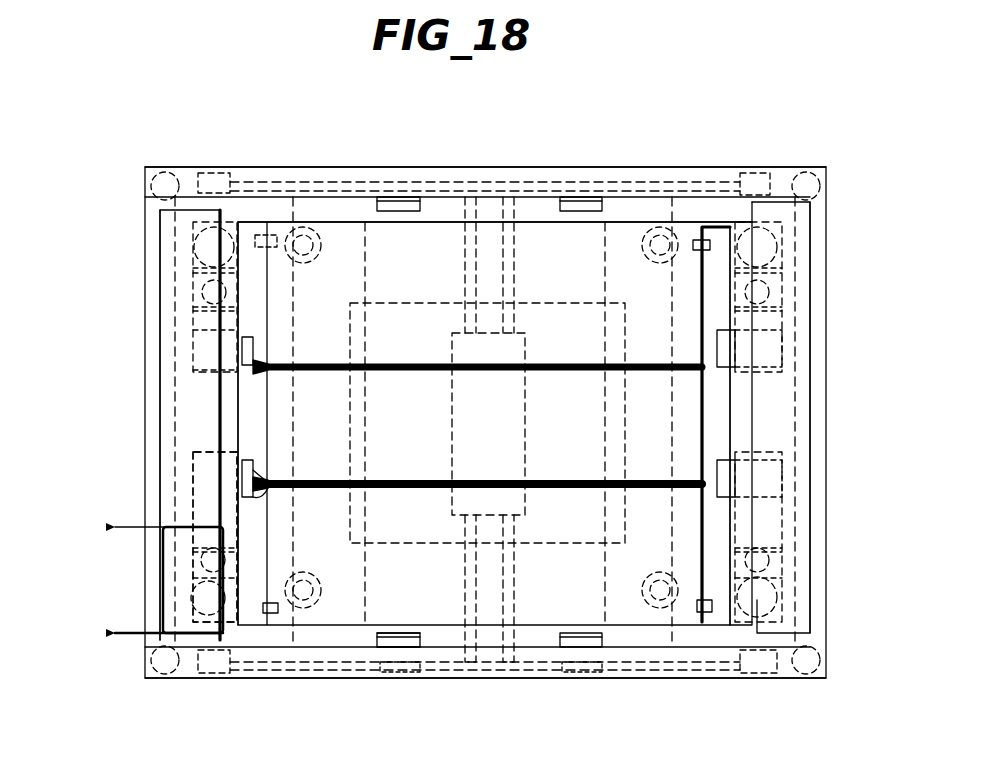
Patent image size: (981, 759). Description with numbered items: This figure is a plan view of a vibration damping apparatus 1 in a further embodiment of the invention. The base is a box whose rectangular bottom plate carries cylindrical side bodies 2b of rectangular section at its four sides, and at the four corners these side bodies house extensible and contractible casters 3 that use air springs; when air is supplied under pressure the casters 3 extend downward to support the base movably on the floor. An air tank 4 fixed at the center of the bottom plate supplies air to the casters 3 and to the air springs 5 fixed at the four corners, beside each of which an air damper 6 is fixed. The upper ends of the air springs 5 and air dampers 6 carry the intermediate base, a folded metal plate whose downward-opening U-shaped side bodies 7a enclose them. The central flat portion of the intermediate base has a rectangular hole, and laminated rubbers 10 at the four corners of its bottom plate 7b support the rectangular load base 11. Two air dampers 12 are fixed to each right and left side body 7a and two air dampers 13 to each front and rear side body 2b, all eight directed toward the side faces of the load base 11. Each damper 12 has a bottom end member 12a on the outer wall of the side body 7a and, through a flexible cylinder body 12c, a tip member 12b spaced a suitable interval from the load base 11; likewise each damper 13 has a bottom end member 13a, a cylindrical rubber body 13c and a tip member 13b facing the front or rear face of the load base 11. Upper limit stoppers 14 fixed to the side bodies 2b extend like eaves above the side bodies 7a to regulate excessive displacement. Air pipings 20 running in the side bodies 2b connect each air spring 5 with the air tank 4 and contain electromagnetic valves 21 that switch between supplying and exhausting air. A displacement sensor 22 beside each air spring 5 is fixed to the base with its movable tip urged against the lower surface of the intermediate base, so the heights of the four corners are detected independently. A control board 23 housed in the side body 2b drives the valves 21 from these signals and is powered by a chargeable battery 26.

The table apparatus 1 is at (272, 148).
The cylindrical side body 2b is at (143, 432).
The caster 3 is at (150, 172).
The air tank 4 is at (527, 515).
The air spring 5 is at (728, 175).
The air damper 6 is at (710, 175).
The U-shaped side body 7a is at (237, 445).
The bottom plate 7b is at (245, 415).
The laminated rubber 10 is at (303, 228).
The load base 11 is at (530, 222).
The air damper 12 is at (200, 335).
The bottom end member 12a is at (217, 475).
The tip member 12b is at (265, 508).
The flexible cylinder body 12c is at (283, 490).
The air damper 13 is at (405, 170).
The bottom end member 13a is at (432, 633).
The tip member 13b is at (393, 633).
The cylindrical rubber body 13c is at (378, 665).
The upper limit stopper 14 is at (160, 480).
The air piping 20 is at (280, 172).
The electromagnetic valve 21 is at (185, 175).
The displacement sensor 22 is at (243, 170).
The control board 23 is at (250, 460).
The chargeable battery 26 is at (272, 367).